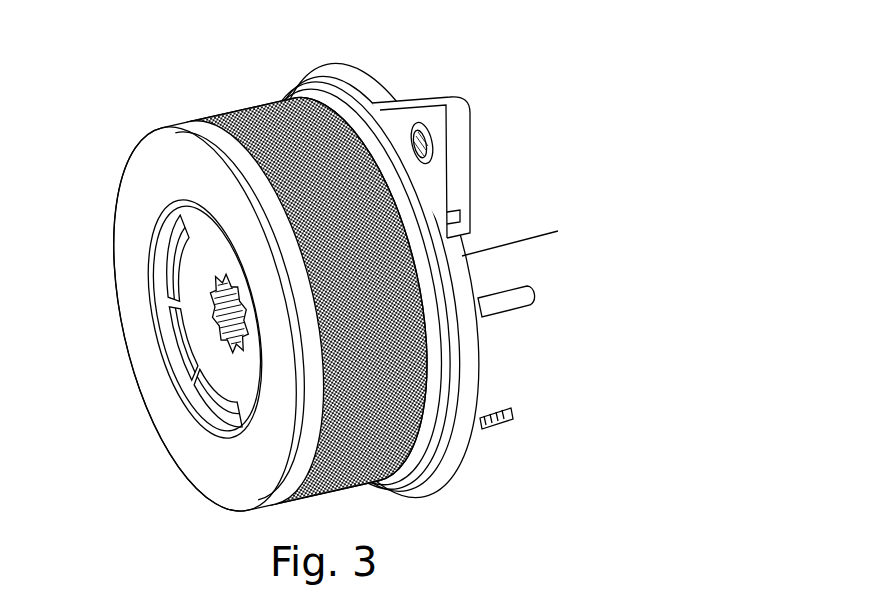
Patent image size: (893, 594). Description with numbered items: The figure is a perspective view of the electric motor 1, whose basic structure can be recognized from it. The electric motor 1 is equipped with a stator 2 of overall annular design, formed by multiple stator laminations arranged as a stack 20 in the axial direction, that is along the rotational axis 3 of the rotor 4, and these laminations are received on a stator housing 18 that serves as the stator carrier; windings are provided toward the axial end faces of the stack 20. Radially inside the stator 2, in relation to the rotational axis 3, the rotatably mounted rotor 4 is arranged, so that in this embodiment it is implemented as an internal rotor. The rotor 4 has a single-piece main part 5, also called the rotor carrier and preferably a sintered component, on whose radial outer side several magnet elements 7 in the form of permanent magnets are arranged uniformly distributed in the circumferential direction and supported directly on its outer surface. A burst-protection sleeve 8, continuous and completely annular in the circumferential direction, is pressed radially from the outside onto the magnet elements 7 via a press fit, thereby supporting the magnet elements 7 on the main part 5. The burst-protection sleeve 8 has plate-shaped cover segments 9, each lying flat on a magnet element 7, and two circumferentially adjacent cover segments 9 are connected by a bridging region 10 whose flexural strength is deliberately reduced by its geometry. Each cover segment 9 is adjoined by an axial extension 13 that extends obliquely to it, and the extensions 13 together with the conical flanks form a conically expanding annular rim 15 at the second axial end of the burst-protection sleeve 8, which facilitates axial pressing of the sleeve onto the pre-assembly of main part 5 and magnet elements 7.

The electric motor 1 is at (430, 62).
The stator 2 is at (187, 118).
The rotational axis 3 is at (217, 320).
The rotor 4 is at (213, 372).
The main part 5 is at (172, 442).
The magnet elements 7 is at (183, 206).
The burst-protection sleeve 8 is at (208, 433).
The cover segments 9 is at (167, 212).
The bridging region 10 is at (160, 233).
The axial extension 13 is at (170, 275).
The annular rim 15 is at (180, 367).
The stator housing 18 is at (309, 88).
The stack 20 is at (235, 100).